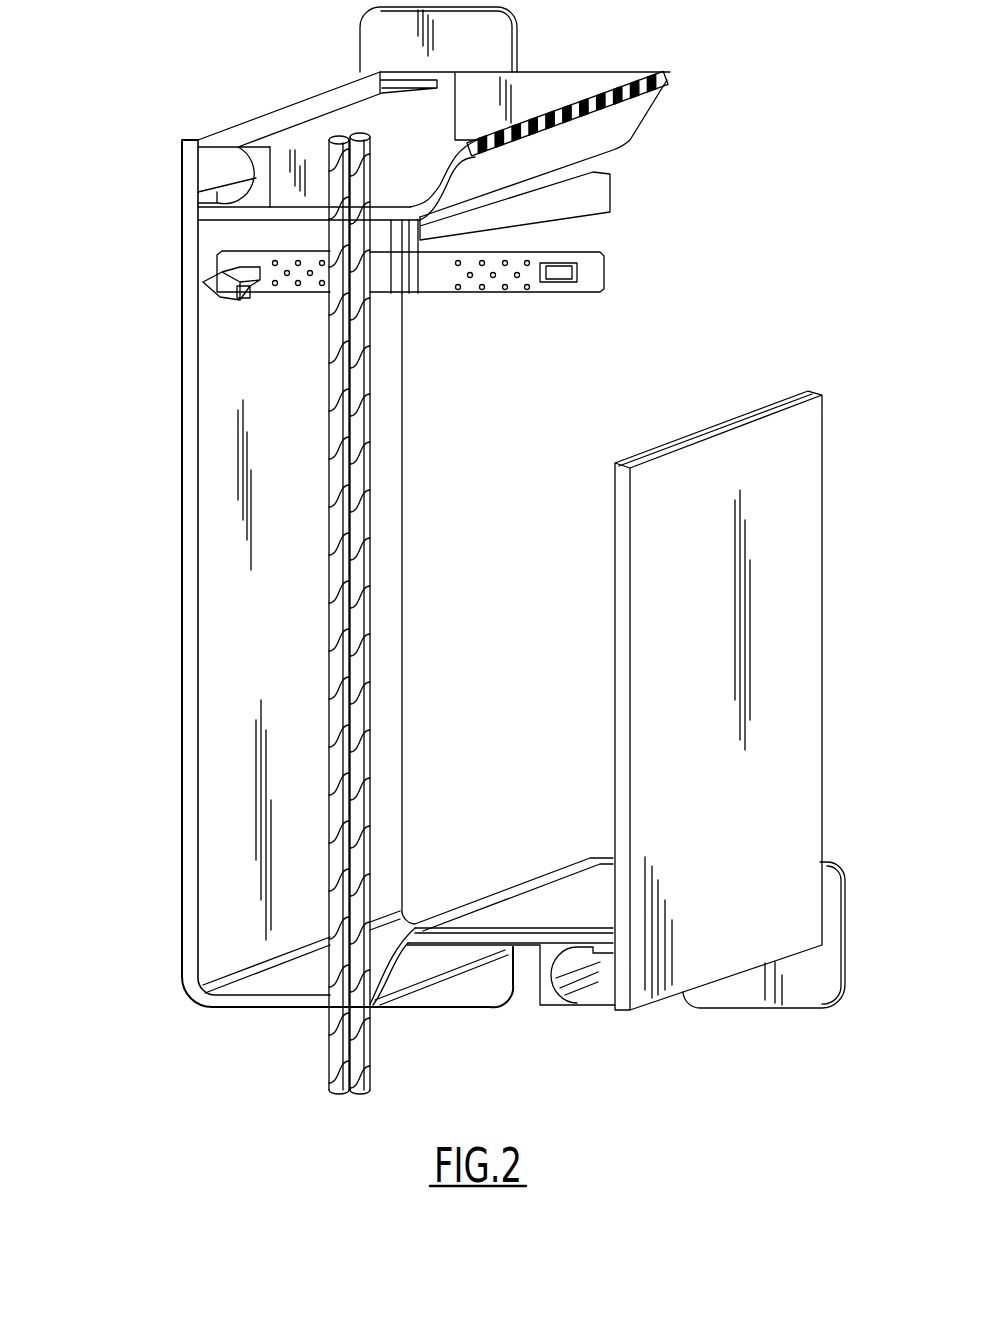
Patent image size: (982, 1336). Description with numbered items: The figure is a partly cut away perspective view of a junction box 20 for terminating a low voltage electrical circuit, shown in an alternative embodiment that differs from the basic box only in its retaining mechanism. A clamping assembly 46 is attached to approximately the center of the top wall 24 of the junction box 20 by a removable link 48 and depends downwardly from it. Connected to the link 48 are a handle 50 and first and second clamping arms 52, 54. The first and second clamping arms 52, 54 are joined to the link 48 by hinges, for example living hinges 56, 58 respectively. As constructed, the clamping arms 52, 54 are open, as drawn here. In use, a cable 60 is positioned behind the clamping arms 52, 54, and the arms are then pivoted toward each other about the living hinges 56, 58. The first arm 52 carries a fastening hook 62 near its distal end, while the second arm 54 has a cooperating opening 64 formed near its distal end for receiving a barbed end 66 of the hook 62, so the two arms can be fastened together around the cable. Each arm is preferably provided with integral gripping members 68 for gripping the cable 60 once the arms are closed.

The junction box 20 is at (158, 301).
The top wall 24 is at (405, 176).
The clamping assembly 46 is at (569, 159).
The removable link 48 is at (435, 212).
The handle 50 is at (613, 185).
The first clamping arm 52 is at (307, 292).
The second clamping arm 54 is at (487, 293).
The living hinge 56 is at (382, 293).
The living hinge 58 is at (413, 293).
The cable 60 is at (337, 585).
The fastening hook 62 is at (220, 273).
The cooperating opening 64 is at (570, 272).
The barbed end 66 is at (220, 290).
The gripping members 68 is at (300, 276).